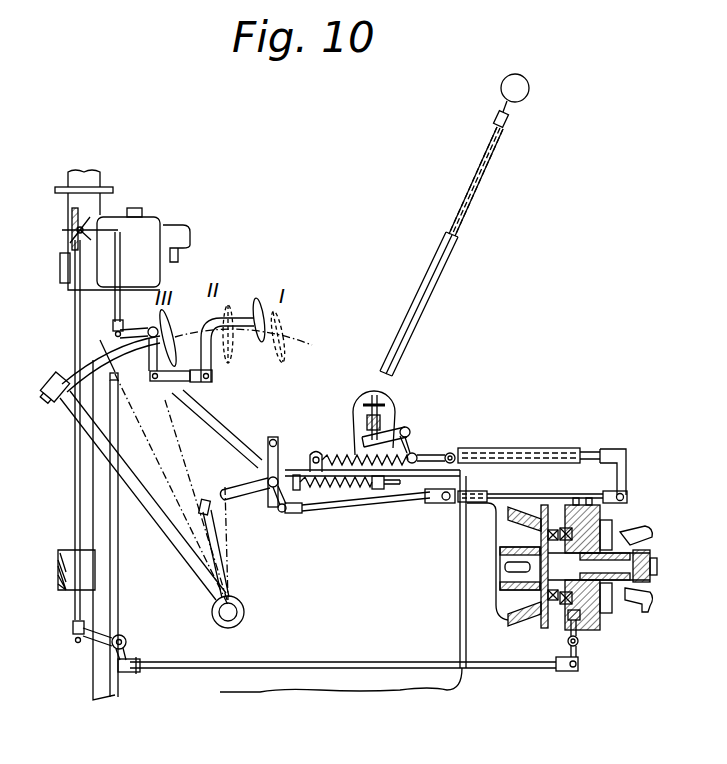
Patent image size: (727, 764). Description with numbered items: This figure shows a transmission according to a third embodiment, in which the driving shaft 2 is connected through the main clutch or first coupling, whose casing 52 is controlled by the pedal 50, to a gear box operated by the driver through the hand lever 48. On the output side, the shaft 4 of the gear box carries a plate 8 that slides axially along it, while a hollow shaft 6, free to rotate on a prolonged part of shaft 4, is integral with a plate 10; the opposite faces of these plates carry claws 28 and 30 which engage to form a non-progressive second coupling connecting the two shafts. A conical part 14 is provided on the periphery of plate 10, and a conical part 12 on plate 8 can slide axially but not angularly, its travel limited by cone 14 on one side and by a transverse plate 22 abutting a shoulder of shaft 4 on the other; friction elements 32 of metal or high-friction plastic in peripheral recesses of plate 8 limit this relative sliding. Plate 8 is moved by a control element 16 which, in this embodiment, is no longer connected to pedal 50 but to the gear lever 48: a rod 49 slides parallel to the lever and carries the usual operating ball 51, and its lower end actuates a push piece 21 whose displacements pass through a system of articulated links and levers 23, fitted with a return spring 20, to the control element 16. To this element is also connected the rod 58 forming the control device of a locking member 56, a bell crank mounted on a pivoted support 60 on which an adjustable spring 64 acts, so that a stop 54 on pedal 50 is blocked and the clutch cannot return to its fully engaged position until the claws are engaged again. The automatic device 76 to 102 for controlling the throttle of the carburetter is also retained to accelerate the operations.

The driving shaft 2 is at (73, 562).
The output shaft of the gear box 4 is at (523, 593).
The hollow shaft 6 is at (606, 586).
The plate 8 is at (517, 540).
The plate 10 is at (595, 540).
The conical part 12 is at (523, 613).
The conical part 14 is at (537, 617).
The control element 16 is at (620, 478).
The return spring 20 is at (340, 452).
The push piece 21 is at (392, 420).
The transverse plate 22 is at (566, 668).
The system of articulated links and levers 23 is at (438, 455).
The claws 28 is at (560, 612).
The claws 30 is at (598, 607).
The friction elements 32 is at (583, 617).
The hand lever 48 is at (425, 300).
The rod 49 is at (455, 240).
The pedal 50 is at (198, 597).
The operating handle or ball 51 is at (529, 90).
The casing of the main clutch 52 is at (150, 600).
The stop 54 is at (210, 525).
The locking member 56 is at (243, 500).
The rod 58 is at (378, 503).
The support 60 is at (278, 440).
The spring 64 is at (355, 487).
The automatic device 76 is at (355, 668).
The automatic device 102 is at (72, 238).